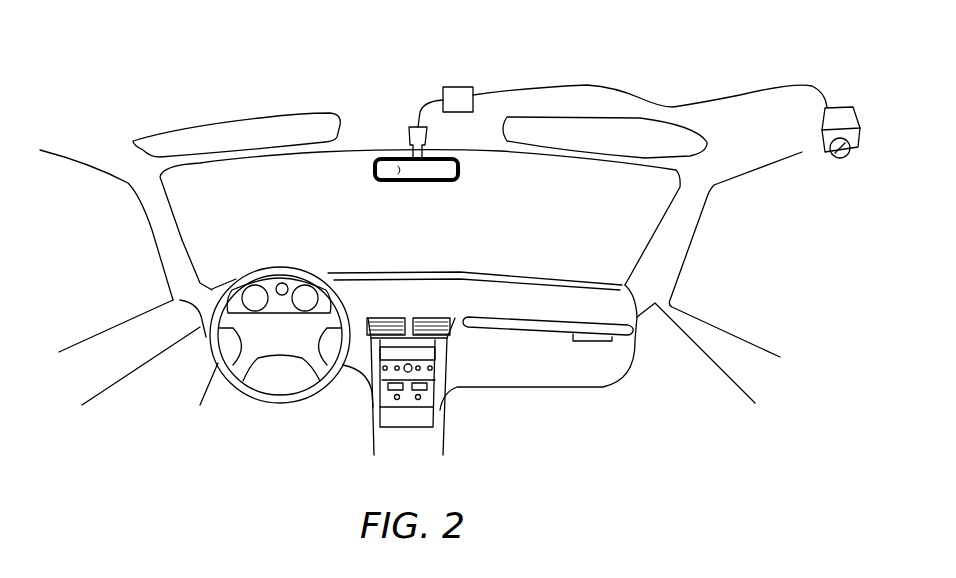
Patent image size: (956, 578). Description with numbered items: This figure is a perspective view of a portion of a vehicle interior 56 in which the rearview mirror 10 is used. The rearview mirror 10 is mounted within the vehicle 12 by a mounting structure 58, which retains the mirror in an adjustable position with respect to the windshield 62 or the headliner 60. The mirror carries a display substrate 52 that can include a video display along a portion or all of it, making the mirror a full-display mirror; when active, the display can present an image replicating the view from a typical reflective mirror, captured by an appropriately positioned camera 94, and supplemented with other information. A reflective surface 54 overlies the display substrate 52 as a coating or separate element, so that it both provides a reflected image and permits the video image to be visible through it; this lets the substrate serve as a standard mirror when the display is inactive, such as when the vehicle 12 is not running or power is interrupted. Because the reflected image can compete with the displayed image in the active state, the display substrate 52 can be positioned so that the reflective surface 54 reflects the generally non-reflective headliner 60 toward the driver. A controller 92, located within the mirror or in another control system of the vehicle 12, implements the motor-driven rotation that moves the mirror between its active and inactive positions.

The vehicle 12 is at (138, 100).
The rearview mirror 10 is at (474, 174).
The display substrate 52 is at (436, 181).
The reflective surface 54 is at (396, 164).
The vehicle interior 56 is at (660, 207).
The mounting structure 58 is at (409, 144).
The headliner 60 is at (380, 70).
The windshield 62 is at (592, 236).
The controller 92 is at (463, 87).
The camera 94 is at (842, 106).